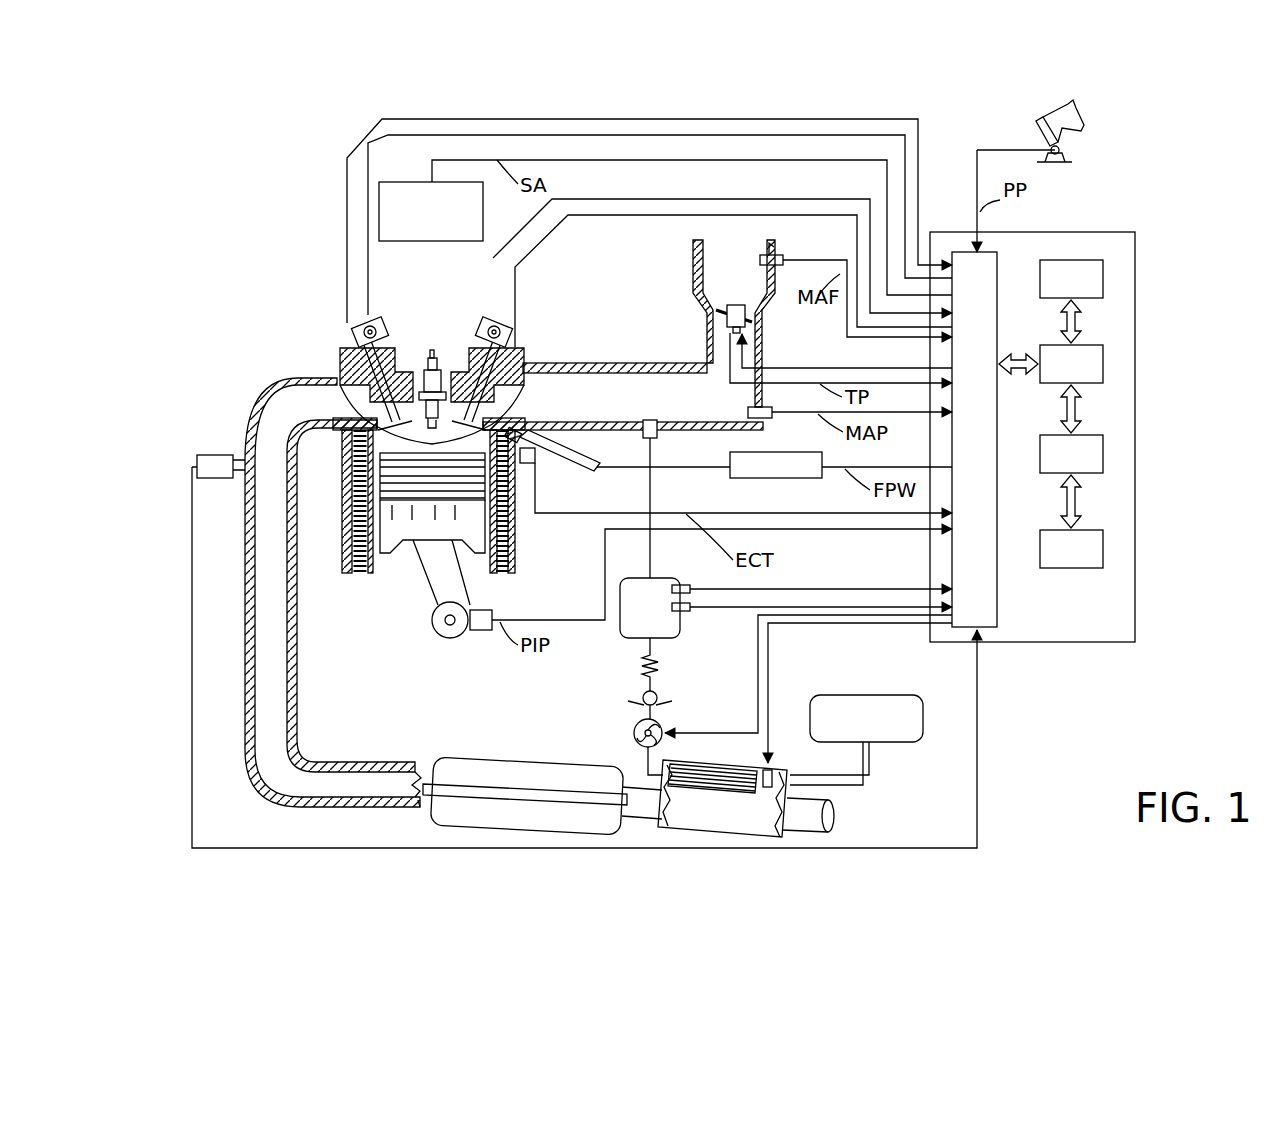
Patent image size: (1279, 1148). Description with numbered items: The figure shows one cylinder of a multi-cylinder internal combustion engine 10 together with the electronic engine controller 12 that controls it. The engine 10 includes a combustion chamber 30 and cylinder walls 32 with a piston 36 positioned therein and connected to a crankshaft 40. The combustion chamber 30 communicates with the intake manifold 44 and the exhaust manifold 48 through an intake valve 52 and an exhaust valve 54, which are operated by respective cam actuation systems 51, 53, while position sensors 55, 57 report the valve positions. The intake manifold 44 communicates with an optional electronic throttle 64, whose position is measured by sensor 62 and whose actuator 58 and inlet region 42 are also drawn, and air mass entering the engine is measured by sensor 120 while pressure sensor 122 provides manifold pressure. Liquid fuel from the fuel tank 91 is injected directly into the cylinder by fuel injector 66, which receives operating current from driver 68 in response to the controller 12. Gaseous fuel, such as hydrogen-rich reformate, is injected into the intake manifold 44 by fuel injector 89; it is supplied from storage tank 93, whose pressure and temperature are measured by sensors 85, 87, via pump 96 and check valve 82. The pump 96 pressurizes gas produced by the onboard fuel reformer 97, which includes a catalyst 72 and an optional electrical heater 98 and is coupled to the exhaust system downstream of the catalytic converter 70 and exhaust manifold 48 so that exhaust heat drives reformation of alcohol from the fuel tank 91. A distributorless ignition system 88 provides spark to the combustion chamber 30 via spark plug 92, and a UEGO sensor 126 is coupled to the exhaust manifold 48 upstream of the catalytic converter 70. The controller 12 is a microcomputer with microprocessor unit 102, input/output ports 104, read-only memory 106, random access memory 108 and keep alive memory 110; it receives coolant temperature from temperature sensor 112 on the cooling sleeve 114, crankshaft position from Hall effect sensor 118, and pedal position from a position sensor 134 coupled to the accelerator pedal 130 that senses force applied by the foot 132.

The internal combustion engine 10 is at (280, 305).
The electronic engine controller 12 is at (1128, 232).
The combustion chamber 30 is at (367, 520).
The cylinder walls 32 is at (380, 560).
The piston 36 is at (415, 528).
The crankshaft 40 is at (440, 637).
The intake manifold 42 is at (746, 283).
The intake manifold 44 is at (688, 411).
The exhaust manifold 48 is at (322, 415).
The cam actuation system 51 is at (488, 320).
The intake valve 52 is at (478, 407).
The cam actuation system 53 is at (368, 143).
The exhaust valve 54 is at (338, 378).
The position sensor 55 is at (502, 335).
The position sensor 57 is at (355, 335).
The throttle actuator 58 is at (725, 330).
The throttle position sensor 62 is at (752, 316).
The electronic throttle 64 is at (722, 312).
The fuel injector 66 is at (552, 458).
The driver 68 is at (745, 479).
The catalytic converter 70 is at (440, 762).
The catalyst 72 is at (706, 768).
The check valve 82 is at (658, 698).
The pressure sensor 85 is at (688, 584).
The temperature sensor 87 is at (690, 611).
The distributorless ignition system 88 is at (393, 182).
The fuel injector 89 is at (644, 438).
The fuel tank 91 is at (868, 695).
The spark plug 92 is at (432, 241).
The storage tank 93 is at (620, 640).
The pump 96 is at (635, 740).
The fuel reformer 97 is at (790, 766).
The electrical heater 98 is at (778, 768).
The microprocessor unit 102 is at (1105, 365).
The input/output ports 104 is at (999, 262).
The read-only memory 106 is at (1105, 277).
The random access memory 108 is at (1105, 455).
The keep alive memory 110 is at (1105, 545).
The temperature sensor 112 is at (532, 470).
The cooling sleeve 114 is at (512, 522).
The Hall effect sensor 118 is at (474, 632).
The air mass sensor 120 is at (777, 253).
The pressure sensor 122 is at (768, 420).
The Universal Exhaust Gas Oxygen sensor 126 is at (197, 458).
The accelerator pedal 130 is at (1040, 135).
The foot 132 is at (1080, 113).
The position sensor 134 is at (1060, 152).